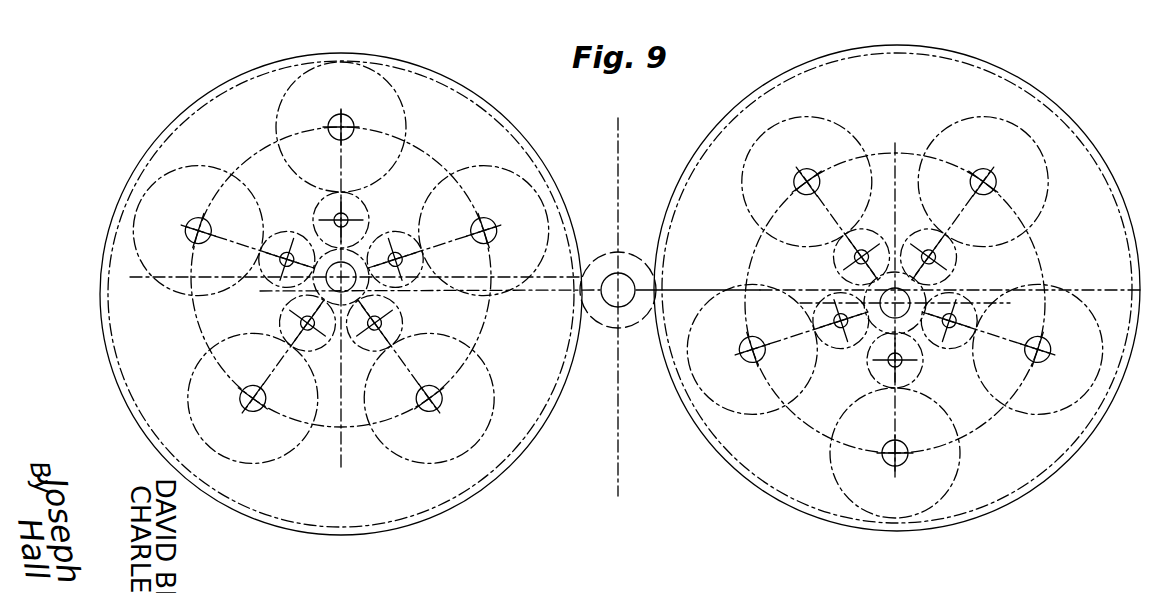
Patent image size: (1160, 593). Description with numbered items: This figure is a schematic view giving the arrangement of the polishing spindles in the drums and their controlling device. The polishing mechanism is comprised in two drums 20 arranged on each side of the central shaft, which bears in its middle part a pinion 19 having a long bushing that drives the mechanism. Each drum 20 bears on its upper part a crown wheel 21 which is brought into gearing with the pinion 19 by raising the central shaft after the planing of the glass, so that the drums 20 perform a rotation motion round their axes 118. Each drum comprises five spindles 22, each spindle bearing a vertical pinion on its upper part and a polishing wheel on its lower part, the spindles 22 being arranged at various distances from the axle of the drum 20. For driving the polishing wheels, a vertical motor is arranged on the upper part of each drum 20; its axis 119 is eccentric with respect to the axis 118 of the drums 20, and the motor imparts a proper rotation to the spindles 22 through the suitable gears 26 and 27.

The pinion 19 is at (612, 320).
The drum 20 is at (497, 106).
The crown wheel 21 is at (533, 152).
The spindle 22 is at (483, 222).
The gear 26 is at (350, 262).
The gear 27 is at (283, 236).
The axis of the drum 118 is at (344, 296).
The axis of the motor 119 is at (326, 270).